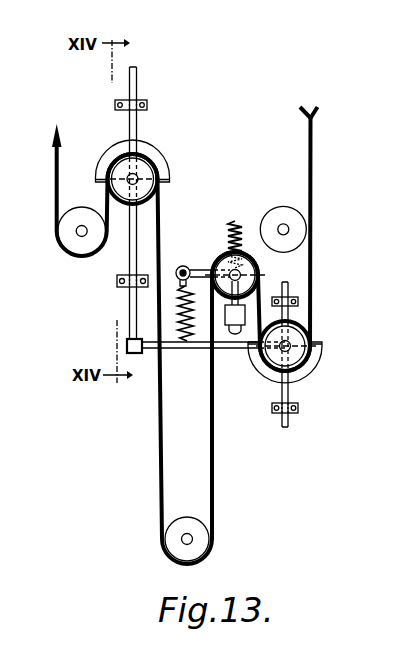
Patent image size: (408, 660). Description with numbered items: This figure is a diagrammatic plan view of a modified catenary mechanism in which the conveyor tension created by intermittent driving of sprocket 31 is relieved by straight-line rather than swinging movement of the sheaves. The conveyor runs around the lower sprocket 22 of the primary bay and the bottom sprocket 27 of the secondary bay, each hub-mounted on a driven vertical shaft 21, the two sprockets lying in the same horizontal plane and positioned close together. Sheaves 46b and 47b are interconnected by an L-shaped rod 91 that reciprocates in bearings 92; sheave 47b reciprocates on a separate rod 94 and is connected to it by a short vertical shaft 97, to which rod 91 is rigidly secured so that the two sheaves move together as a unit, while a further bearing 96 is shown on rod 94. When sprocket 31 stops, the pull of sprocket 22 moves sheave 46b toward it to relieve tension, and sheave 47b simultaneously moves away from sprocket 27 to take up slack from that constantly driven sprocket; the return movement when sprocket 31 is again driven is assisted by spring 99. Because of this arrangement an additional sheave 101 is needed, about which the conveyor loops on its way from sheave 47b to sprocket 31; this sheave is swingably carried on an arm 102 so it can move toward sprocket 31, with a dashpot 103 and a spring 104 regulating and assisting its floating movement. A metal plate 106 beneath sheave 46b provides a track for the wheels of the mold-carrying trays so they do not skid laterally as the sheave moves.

The metal plate 106 is at (118, 150).
The sheave 46b is at (148, 184).
The L-shaped rod 91 is at (132, 307).
The bearings 92 is at (136, 176).
The lower sprocket 22 is at (73, 242).
The driven vertically mounted shaft 21 is at (76, 231).
The bottom sprocket 27 is at (287, 212).
The sheave 101 is at (248, 250).
The spring 104 is at (230, 231).
The arm 102 is at (198, 263).
The spring 99 is at (181, 319).
The dashpot 103 is at (246, 311).
The sheave 47b is at (293, 346).
The short vertical shaft 97 is at (292, 343).
The rod 94 is at (297, 392).
The clamp 96 is at (300, 408).
The sprocket 31 is at (203, 537).